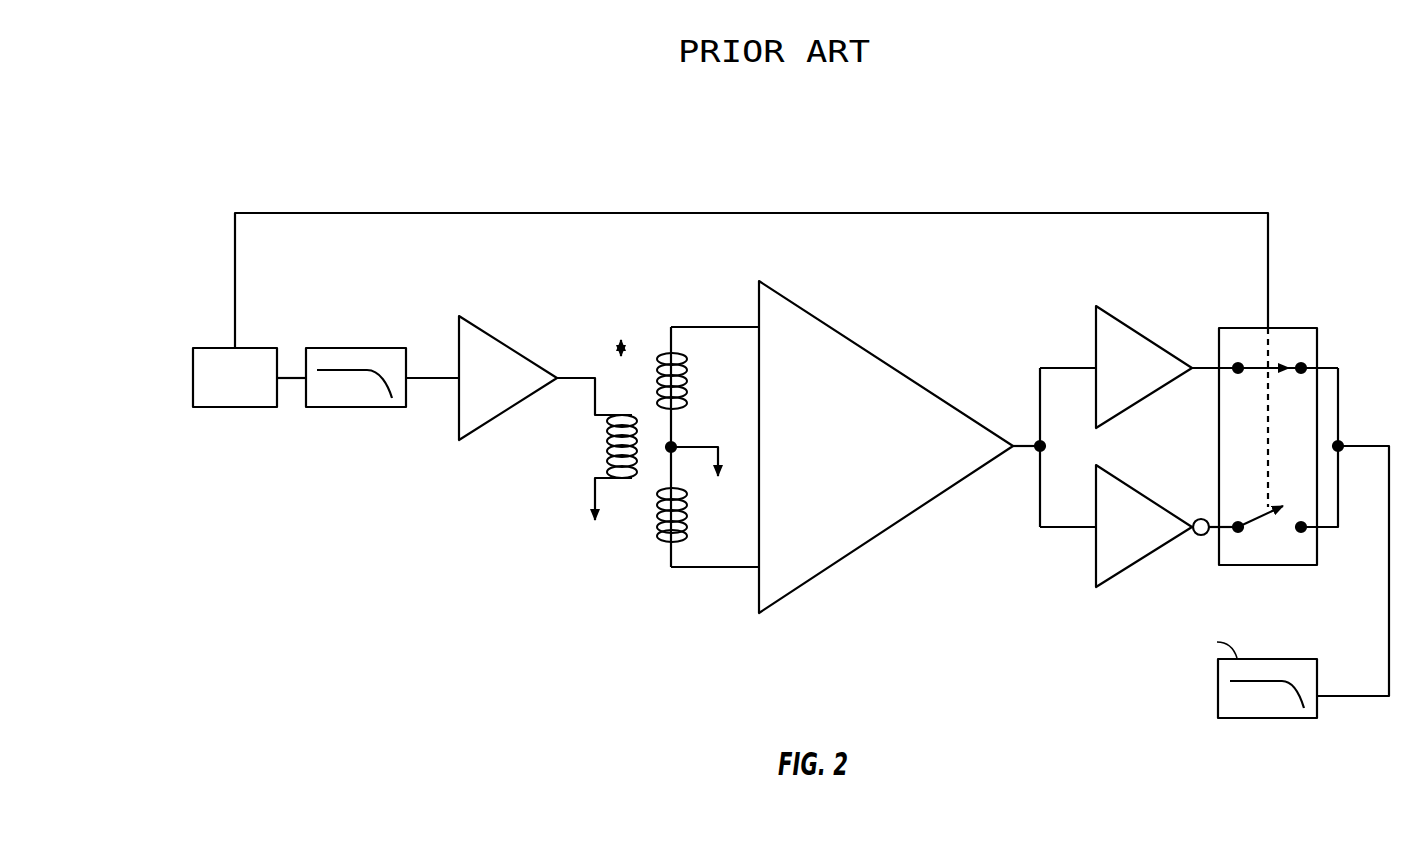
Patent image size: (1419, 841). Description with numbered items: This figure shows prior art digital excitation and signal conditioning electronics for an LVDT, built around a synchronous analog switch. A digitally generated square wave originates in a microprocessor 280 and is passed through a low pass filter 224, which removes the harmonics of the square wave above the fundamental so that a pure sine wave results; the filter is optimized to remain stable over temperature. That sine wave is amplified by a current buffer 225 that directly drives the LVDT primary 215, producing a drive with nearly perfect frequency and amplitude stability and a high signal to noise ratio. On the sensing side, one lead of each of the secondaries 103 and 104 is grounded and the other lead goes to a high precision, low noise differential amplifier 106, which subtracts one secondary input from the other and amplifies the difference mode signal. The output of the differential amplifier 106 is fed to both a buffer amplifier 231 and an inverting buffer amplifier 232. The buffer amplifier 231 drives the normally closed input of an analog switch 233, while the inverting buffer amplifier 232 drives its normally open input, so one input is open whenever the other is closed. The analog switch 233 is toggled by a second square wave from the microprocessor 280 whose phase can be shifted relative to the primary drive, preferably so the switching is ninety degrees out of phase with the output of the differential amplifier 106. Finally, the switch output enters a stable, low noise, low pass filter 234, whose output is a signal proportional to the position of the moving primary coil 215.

The microprocessor 280 is at (233, 415).
The low pass filter 224 is at (343, 340).
The current buffer 225 is at (455, 415).
The LVDT primary 215 is at (600, 467).
The secondary 104 is at (690, 354).
The secondary 103 is at (690, 535).
The differential amplifier 106 is at (869, 341).
The buffer amplifier 231 is at (1092, 328).
The inverting buffer amplifier 232 is at (1092, 557).
The analog switch 233 is at (1305, 323).
The low pass filter 234 is at (1242, 722).